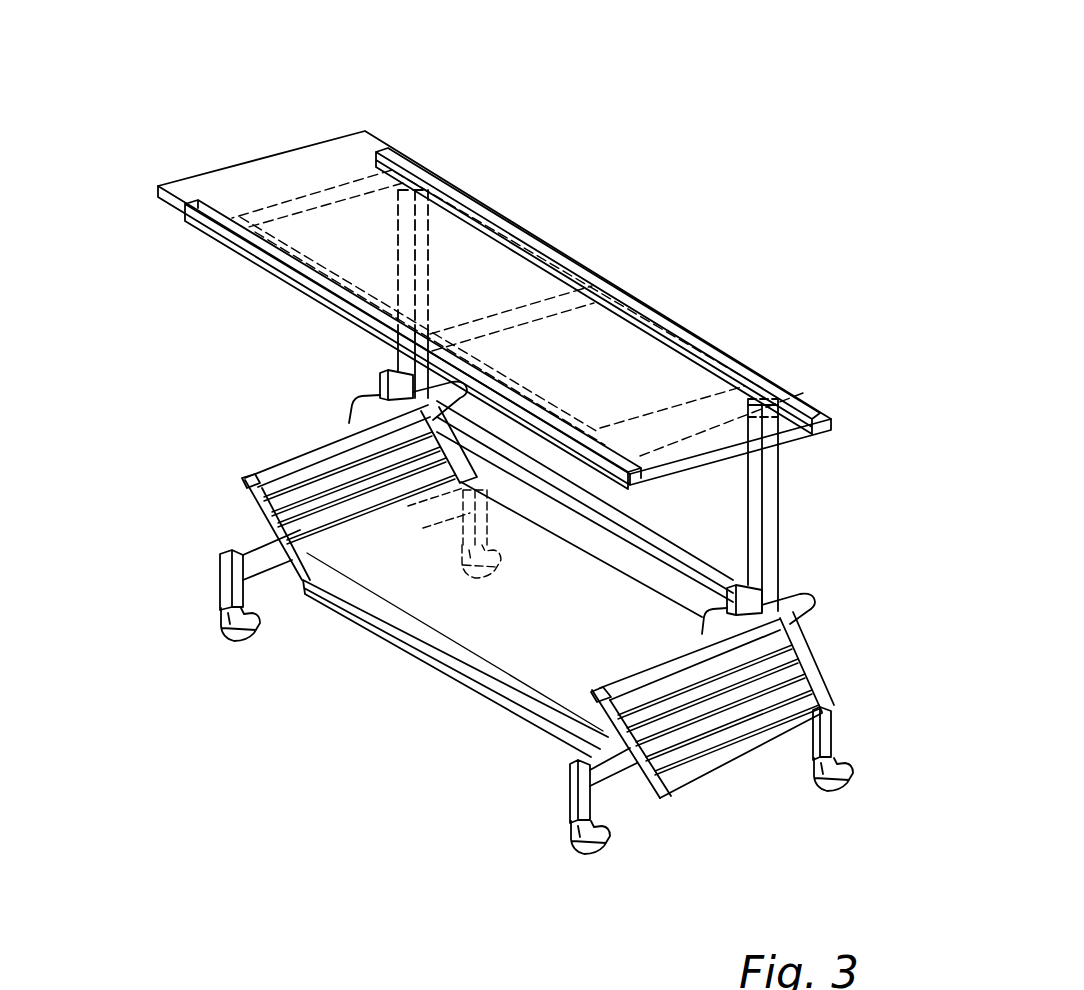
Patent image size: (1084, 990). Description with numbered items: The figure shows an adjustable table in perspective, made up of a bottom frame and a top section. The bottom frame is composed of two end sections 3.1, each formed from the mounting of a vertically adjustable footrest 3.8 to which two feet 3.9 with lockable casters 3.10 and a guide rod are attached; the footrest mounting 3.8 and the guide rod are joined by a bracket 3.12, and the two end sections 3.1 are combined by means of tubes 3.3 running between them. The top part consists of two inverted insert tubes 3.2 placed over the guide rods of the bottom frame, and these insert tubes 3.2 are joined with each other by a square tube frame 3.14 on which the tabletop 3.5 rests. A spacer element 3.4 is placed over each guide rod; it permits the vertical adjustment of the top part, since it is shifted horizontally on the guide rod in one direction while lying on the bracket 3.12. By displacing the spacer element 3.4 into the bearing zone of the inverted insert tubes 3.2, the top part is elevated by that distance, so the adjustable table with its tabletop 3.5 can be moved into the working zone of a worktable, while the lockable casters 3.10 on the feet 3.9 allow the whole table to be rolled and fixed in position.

The end section 3.1 is at (798, 663).
The insert tube 3.2 is at (772, 468).
The tube 3.3 is at (418, 642).
The spacer element 3.4 is at (397, 387).
The tabletop 3.5 is at (330, 150).
The vertically adjustable footrest 3.8 is at (687, 710).
The foot 3.9 is at (825, 738).
The lockable caster 3.10 is at (568, 835).
The bracket 3.12 is at (797, 603).
The square tube frame 3.14 is at (527, 248).